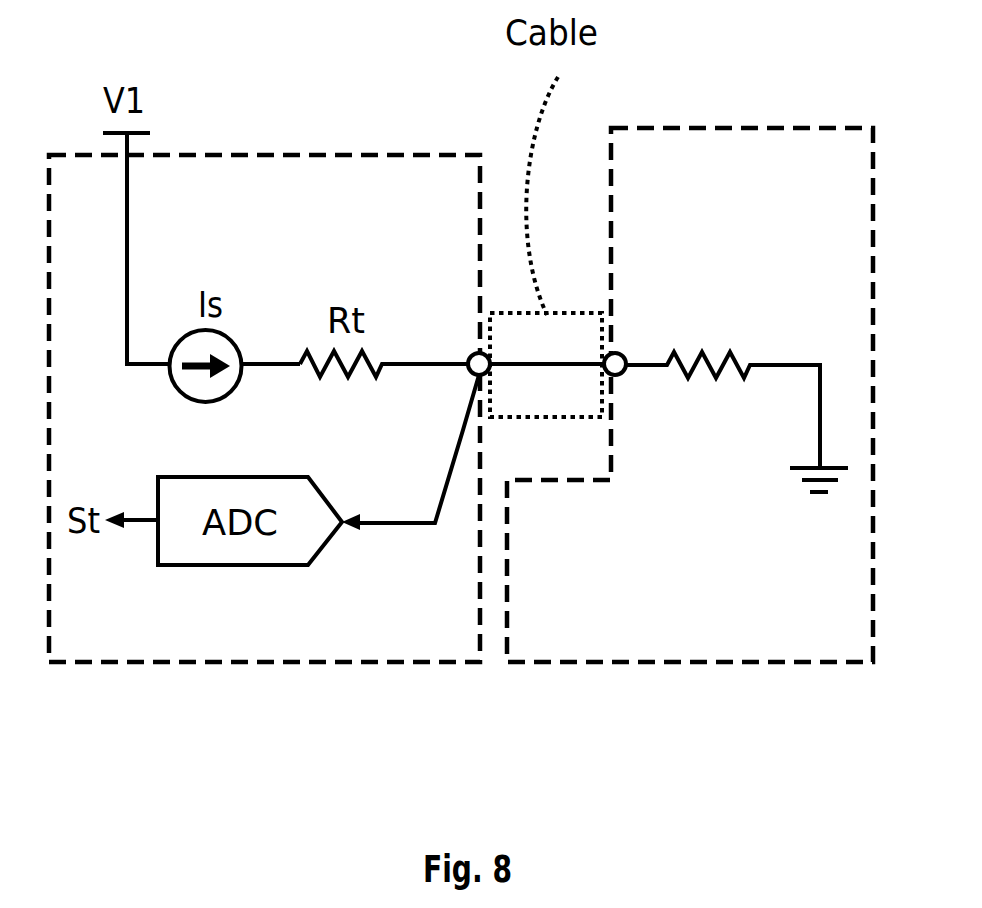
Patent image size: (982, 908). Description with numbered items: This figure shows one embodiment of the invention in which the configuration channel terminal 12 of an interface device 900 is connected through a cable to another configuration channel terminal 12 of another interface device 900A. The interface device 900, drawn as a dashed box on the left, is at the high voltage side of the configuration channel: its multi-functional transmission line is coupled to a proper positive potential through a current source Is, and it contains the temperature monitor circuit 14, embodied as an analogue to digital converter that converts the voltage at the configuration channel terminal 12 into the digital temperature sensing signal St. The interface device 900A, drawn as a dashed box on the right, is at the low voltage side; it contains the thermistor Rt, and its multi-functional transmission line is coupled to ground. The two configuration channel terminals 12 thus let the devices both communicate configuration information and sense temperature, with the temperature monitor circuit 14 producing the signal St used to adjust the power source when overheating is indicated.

The configuration channel terminal 12 is at (468, 358).
The temperature monitor circuit 14 is at (330, 542).
The interface device 900 is at (392, 153).
The interface device 900A is at (690, 126).